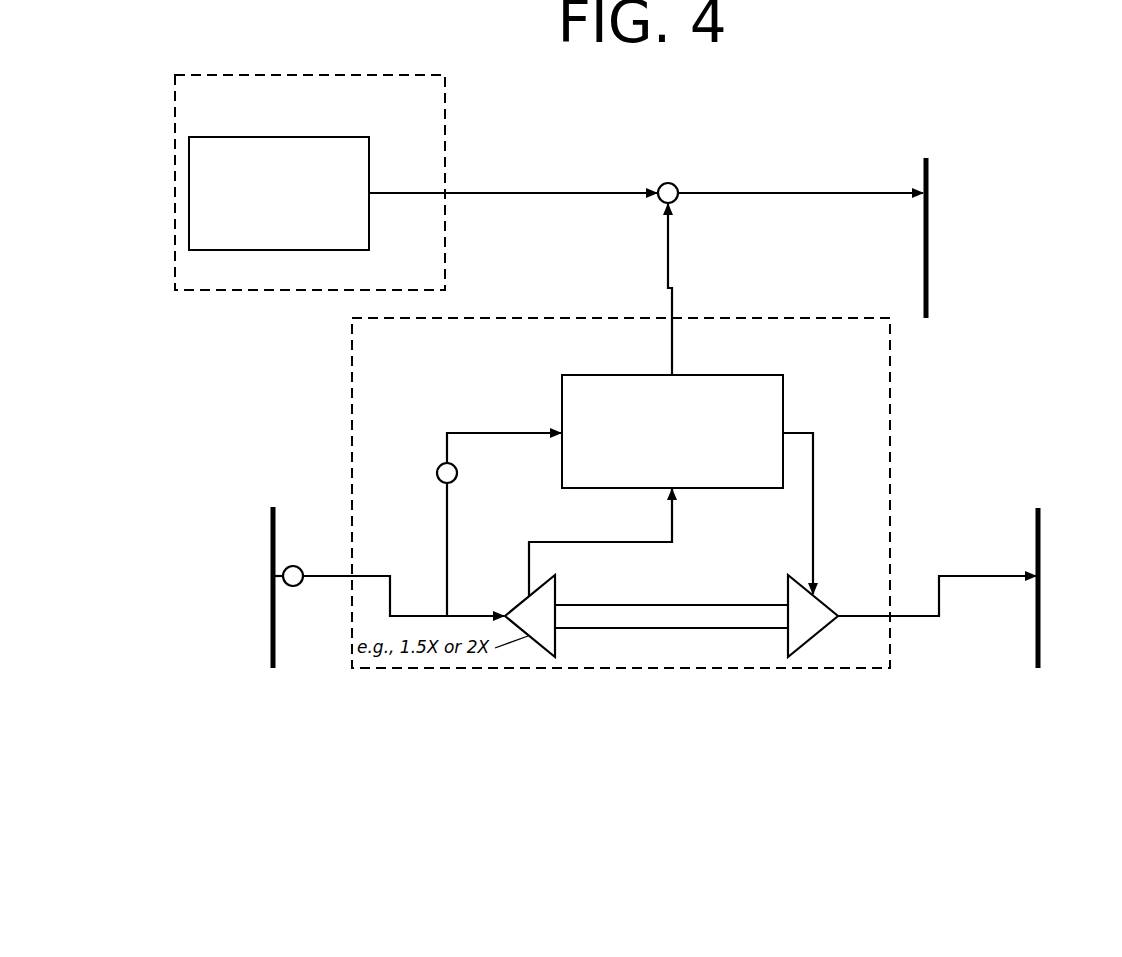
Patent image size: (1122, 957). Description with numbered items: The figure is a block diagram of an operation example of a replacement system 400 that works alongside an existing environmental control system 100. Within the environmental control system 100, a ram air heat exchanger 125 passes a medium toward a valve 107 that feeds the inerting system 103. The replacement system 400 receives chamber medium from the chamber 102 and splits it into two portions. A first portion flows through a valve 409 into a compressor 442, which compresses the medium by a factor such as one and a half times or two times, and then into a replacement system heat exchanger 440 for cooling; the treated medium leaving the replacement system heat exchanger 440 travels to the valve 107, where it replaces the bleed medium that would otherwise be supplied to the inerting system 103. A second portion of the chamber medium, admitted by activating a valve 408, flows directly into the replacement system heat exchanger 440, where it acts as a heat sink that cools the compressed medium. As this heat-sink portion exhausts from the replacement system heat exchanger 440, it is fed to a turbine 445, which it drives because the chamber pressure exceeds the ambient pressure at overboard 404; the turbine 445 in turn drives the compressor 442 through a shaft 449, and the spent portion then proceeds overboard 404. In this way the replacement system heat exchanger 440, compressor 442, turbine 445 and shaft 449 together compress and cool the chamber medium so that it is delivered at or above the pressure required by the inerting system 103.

The environmental control system 100 is at (427, 116).
The ram air heat exchanger 125 is at (279, 193).
The valve 107 is at (661, 186).
The inerting system 103 is at (927, 199).
The replacement system 400 is at (413, 357).
The replacement system heat exchanger 440 is at (672, 431).
The valve 408 is at (454, 481).
The compressor 442 is at (530, 616).
The shaft 449 is at (671, 616).
The turbine 445 is at (813, 616).
The overboard 404 is at (1037, 563).
The chamber 102 is at (273, 563).
The valve 409 is at (300, 584).